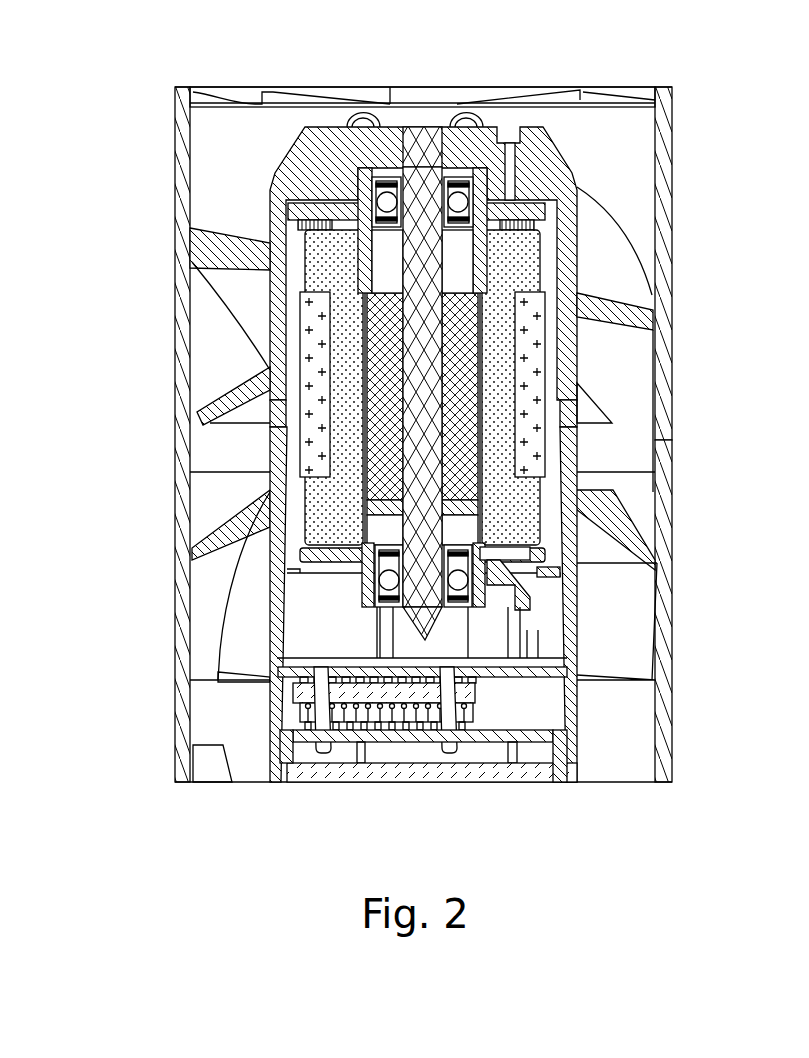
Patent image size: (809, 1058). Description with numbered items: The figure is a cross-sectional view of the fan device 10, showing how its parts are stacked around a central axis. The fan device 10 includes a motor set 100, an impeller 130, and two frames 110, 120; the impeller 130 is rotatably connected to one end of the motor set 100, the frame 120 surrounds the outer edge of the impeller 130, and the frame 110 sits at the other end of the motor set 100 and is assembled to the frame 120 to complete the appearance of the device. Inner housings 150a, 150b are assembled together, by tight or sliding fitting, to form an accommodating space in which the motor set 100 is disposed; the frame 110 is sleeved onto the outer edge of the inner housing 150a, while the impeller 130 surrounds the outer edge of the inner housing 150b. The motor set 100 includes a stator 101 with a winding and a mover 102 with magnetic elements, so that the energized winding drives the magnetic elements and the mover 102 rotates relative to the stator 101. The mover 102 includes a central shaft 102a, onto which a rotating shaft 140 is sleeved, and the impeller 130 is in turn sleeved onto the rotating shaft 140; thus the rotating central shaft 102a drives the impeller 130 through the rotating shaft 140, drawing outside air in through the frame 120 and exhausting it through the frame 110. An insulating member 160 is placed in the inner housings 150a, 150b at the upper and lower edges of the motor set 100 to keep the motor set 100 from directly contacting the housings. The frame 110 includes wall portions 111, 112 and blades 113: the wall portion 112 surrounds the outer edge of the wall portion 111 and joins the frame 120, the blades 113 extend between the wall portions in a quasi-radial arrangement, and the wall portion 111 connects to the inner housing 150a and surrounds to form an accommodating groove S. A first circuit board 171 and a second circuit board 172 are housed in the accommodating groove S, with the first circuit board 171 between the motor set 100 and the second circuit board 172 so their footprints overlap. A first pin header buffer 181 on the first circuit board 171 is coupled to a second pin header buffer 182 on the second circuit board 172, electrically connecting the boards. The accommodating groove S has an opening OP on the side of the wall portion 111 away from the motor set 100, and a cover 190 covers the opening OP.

The fan device 10 is at (100, 46).
The motor set 100 is at (314, 326).
The stator 101 is at (370, 398).
The mover 102 is at (370, 357).
The central shaft 102a is at (428, 125).
The frame 110 is at (706, 797).
The wall portion 111 is at (575, 623).
The wall portion 112 is at (662, 592).
The blades 113 is at (636, 522).
The frame 120 is at (705, 96).
The impeller 130 is at (300, 152).
The rotating shaft 140 is at (390, 100).
The inner housing 150a is at (300, 478).
The inner housing 150b is at (305, 260).
The insulating member 160 is at (300, 210).
The first circuit board 171 is at (295, 668).
The second circuit board 172 is at (295, 736).
The first pin header buffer 181 is at (295, 688).
The second pin header buffer 182 is at (300, 712).
The cover 190 is at (400, 782).
The opening OP is at (282, 789).
The accommodating groove S is at (266, 606).